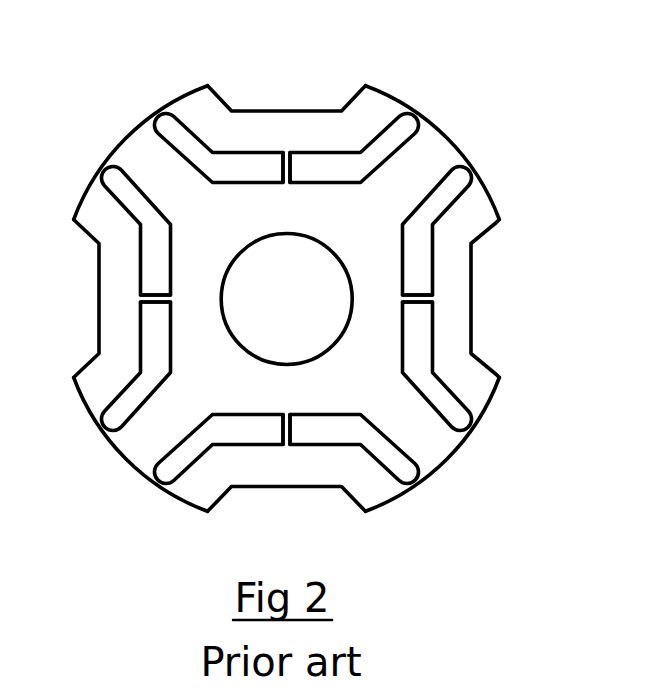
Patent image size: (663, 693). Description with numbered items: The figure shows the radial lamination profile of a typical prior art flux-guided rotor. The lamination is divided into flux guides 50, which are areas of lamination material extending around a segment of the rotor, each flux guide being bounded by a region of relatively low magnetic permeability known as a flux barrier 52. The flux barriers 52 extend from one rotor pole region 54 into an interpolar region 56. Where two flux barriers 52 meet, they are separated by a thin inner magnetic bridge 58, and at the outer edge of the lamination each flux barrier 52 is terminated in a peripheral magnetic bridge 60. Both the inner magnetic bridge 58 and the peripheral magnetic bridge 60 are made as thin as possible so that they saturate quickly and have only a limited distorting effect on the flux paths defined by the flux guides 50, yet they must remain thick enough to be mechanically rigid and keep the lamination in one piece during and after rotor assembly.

The flux guide 50 is at (322, 291).
The flux barrier 52 is at (133, 196).
The rotor pole region 54 is at (299, 291).
The interpolar region 56 is at (90, 297).
The inner magnetic bridge 58 is at (287, 152).
The peripheral magnetic bridge 60 is at (153, 112).